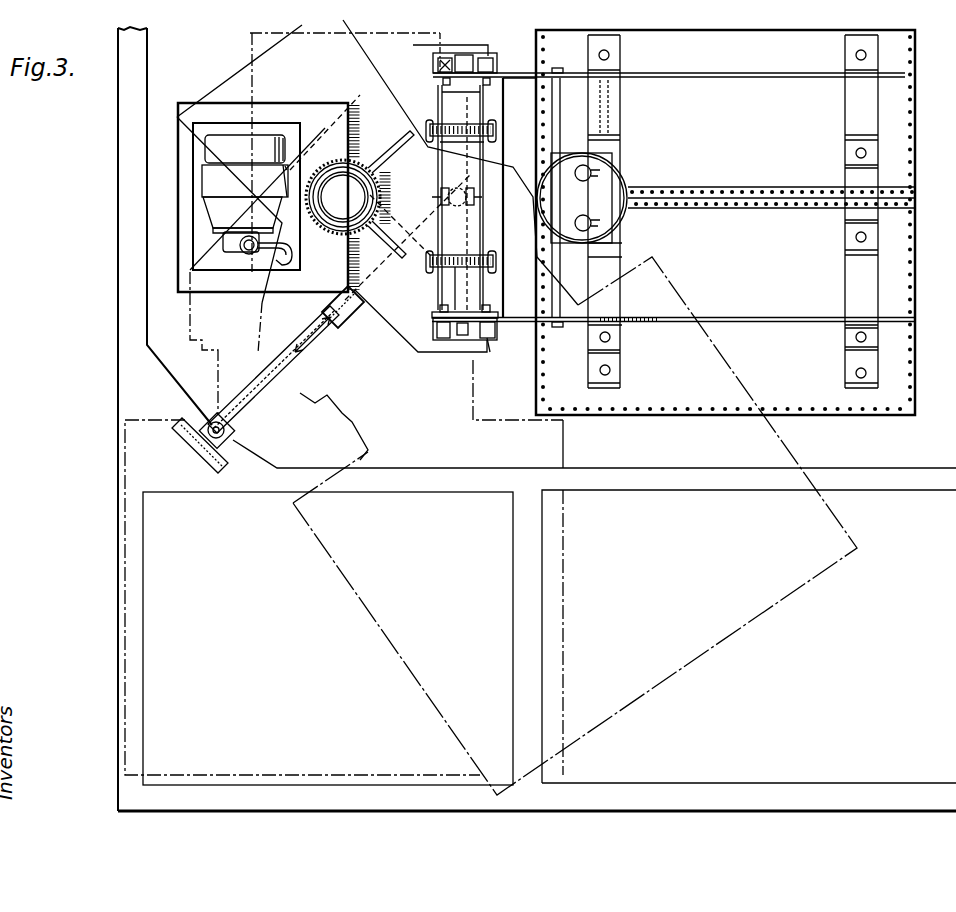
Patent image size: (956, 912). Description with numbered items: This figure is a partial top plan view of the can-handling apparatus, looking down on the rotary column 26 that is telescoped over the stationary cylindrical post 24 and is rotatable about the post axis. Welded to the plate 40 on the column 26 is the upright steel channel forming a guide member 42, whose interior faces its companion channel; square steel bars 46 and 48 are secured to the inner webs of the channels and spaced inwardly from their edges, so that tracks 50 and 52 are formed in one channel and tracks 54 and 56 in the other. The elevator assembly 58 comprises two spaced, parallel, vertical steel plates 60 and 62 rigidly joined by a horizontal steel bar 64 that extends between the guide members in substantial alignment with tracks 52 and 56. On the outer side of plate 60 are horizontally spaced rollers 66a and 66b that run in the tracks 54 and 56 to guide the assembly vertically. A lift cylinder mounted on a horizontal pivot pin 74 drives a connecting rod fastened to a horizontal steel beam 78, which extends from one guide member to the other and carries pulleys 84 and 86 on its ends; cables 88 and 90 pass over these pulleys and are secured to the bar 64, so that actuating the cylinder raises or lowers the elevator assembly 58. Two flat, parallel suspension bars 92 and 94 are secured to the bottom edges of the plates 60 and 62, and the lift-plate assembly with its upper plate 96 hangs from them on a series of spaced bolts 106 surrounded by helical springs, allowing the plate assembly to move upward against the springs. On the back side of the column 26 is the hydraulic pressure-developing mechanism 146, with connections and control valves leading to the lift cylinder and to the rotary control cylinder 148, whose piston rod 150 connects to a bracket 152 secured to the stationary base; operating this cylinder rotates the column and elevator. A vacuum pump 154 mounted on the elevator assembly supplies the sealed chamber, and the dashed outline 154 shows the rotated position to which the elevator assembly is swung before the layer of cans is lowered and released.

The stationary post 24 is at (334, 217).
The rotary column 26 is at (338, 236).
The plate 40 is at (385, 72).
The guide member 42 is at (436, 340).
The steel bar 46 is at (462, 340).
The steel bar 48 is at (465, 54).
The track 50 is at (445, 338).
The track 52 is at (490, 343).
The track 54 is at (438, 68).
The track 56 is at (488, 58).
The elevator assembly 58 is at (724, 66).
The steel plate 60 is at (772, 71).
The steel plate 62 is at (740, 316).
The horizontal steel bar 64 is at (496, 118).
The roller 66a is at (446, 72).
The roller 66b is at (500, 72).
The pivot pin 74 is at (440, 197).
The horizontal steel beam 78 is at (456, 172).
The pulley 84 is at (436, 280).
The pulley 86 is at (450, 126).
The cable 88 is at (432, 261).
The cable 90 is at (496, 136).
The suspension bar 92 is at (622, 114).
The suspension bar 94 is at (846, 113).
The upper plate 96 is at (770, 126).
The bolt 106 is at (856, 237).
The hydraulic pressure-developing mechanism 146 is at (246, 157).
The rotary control cylinder 148 is at (344, 325).
The piston rod 150 is at (270, 395).
The bracket 152 is at (226, 458).
The vacuum pump 154 is at (616, 188).